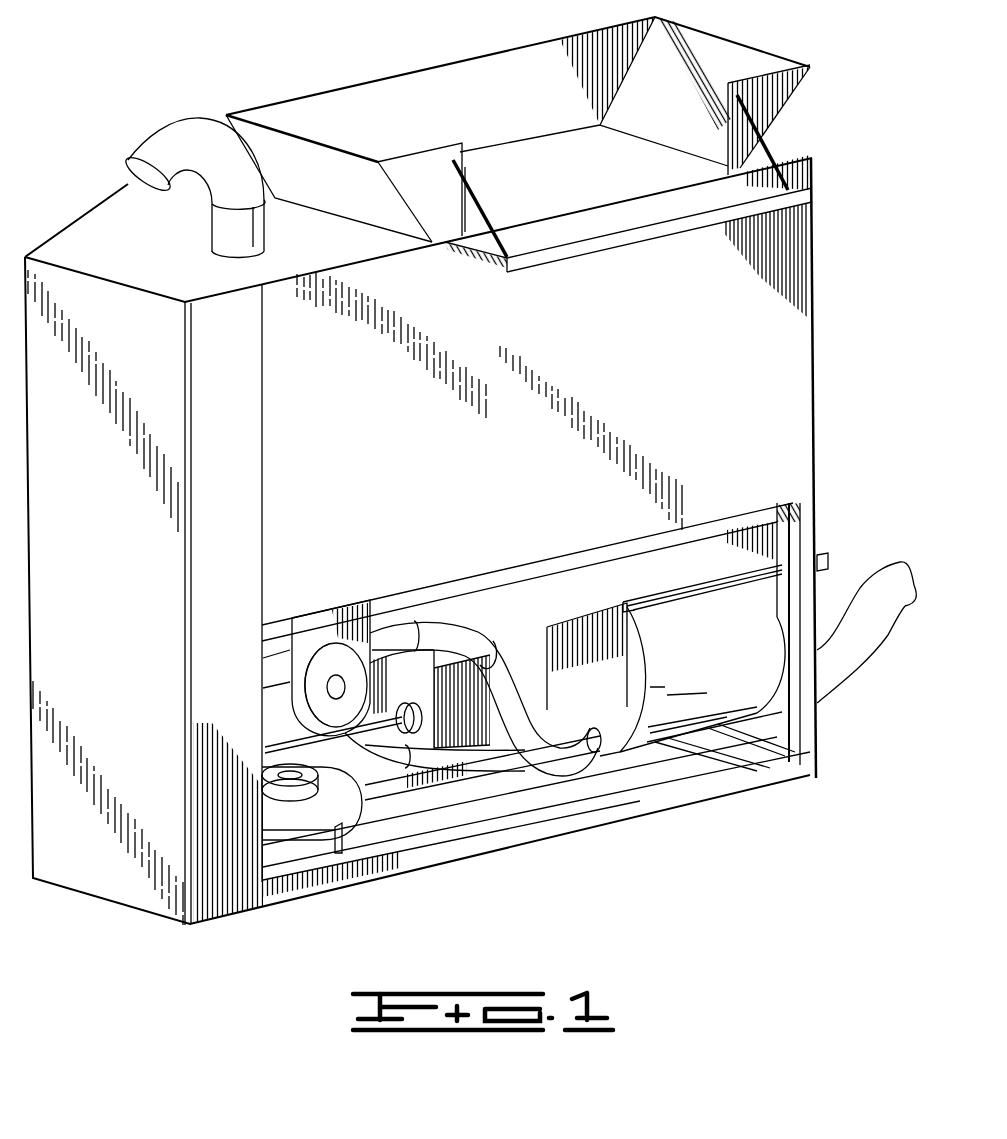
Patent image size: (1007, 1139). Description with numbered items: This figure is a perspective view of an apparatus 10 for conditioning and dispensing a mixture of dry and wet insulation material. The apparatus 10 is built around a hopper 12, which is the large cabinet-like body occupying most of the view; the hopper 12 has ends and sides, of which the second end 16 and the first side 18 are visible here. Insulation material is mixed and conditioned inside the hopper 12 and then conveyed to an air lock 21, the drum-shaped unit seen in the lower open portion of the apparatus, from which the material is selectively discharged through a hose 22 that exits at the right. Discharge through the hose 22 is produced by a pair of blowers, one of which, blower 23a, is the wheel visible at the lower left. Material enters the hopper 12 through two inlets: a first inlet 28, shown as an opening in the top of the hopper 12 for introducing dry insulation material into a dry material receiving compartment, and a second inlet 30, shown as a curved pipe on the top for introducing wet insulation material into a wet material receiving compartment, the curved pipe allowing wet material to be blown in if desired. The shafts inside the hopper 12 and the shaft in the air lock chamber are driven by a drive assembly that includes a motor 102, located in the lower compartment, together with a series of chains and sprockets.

The apparatus 10 is at (262, 73).
The hopper 12 is at (812, 267).
The second end 16 is at (812, 380).
The first side 18 is at (773, 432).
The air lock 21 is at (760, 715).
The hose 22 is at (877, 583).
The blower 23a is at (347, 700).
The first inlet 28 is at (507, 147).
The second inlet 30 is at (160, 128).
The motor 102 is at (303, 838).